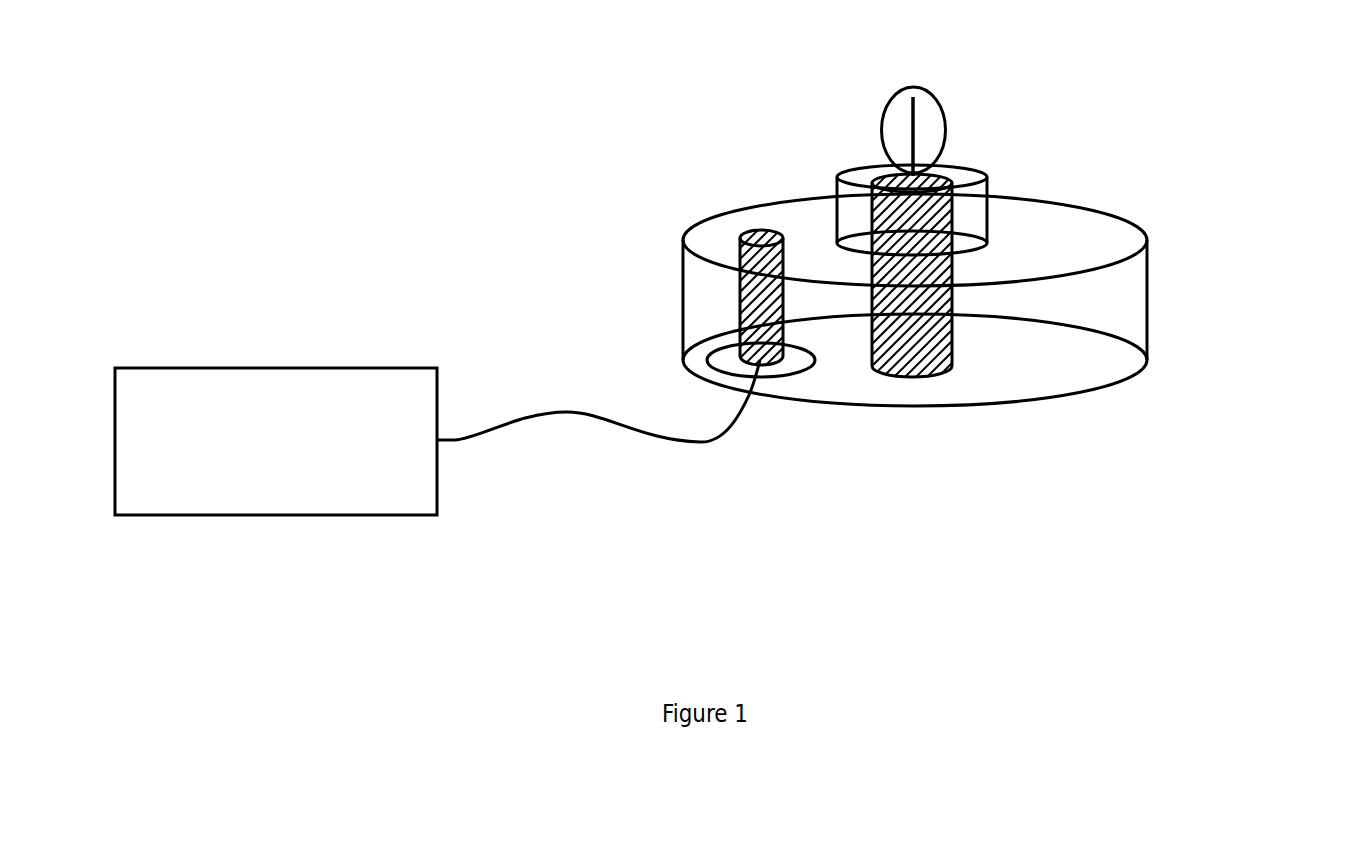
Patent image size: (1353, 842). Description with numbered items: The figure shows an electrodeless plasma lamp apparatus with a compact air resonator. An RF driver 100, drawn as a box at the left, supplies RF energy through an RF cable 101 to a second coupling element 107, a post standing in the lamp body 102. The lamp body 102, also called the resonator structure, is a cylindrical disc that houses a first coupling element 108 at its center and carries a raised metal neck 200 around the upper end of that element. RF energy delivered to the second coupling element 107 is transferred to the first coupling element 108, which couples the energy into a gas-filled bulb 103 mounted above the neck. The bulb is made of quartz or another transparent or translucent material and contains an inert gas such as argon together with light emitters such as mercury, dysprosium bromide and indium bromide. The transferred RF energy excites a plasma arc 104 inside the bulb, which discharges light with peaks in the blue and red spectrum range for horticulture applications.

The RF driver 100 is at (272, 352).
The RF cable 101 is at (662, 452).
The lamp body 102 is at (1160, 273).
The gas-filled bulb 103 is at (865, 119).
The plasma arc 104 is at (930, 132).
The second coupling element 107 is at (725, 308).
The first coupling element 108 is at (952, 340).
The raised metal neck 200 is at (1000, 201).